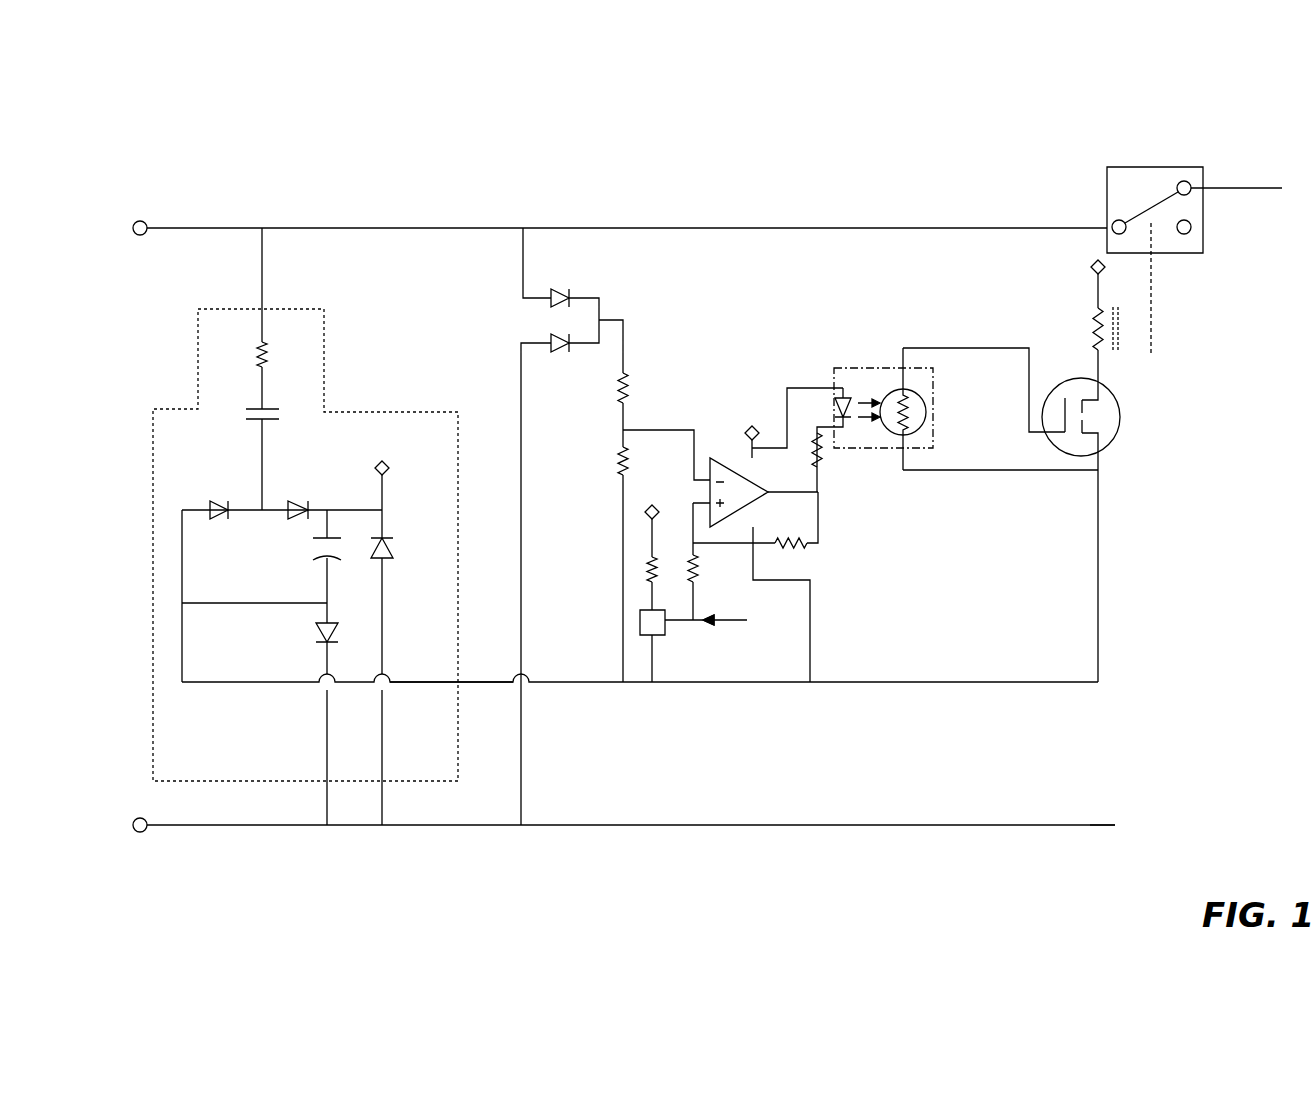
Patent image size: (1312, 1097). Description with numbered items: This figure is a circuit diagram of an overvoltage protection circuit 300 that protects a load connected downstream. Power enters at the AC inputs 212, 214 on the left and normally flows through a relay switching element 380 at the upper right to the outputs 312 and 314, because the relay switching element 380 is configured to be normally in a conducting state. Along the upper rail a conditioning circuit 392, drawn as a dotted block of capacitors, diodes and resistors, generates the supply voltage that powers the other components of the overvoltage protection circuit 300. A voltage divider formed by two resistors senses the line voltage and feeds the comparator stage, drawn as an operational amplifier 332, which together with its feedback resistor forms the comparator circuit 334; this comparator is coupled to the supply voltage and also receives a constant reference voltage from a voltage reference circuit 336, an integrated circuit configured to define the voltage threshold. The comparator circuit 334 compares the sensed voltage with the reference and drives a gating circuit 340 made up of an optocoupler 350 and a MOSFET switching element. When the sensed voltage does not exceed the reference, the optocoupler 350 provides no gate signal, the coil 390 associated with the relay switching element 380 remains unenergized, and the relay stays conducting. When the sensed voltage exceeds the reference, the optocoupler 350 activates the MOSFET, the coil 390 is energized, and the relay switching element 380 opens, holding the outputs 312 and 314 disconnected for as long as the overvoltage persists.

The overvoltage protection circuit 300 is at (835, 148).
The AC input 212 is at (200, 232).
The AC input 214 is at (167, 830).
The output 312 is at (1264, 192).
The output 314 is at (1093, 828).
The operational amplifier 332 is at (720, 385).
The comparator circuit 334 is at (823, 545).
The voltage reference circuit 336 is at (655, 630).
The gating circuit 340 is at (1122, 458).
The optocoupler 350 is at (865, 368).
The relay switching element 380 is at (1170, 165).
The coil 390 is at (1100, 350).
The conditioning circuit 392 is at (393, 377).